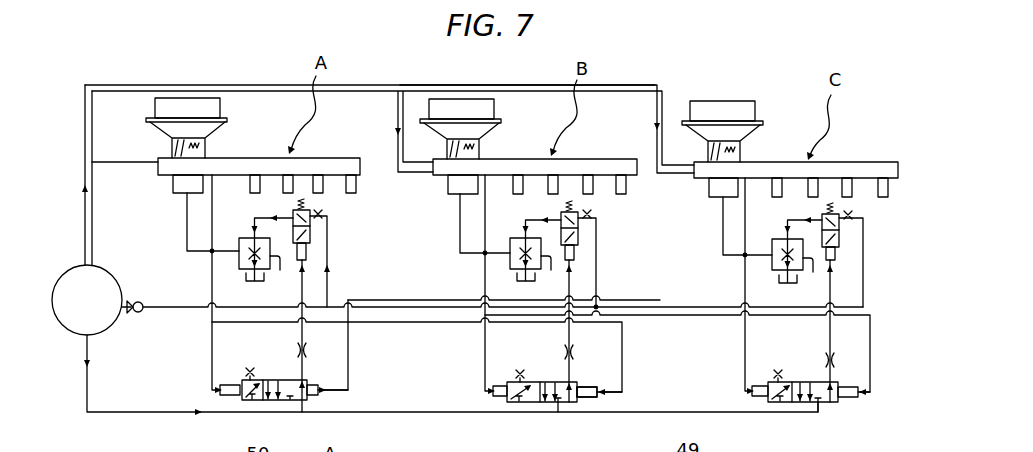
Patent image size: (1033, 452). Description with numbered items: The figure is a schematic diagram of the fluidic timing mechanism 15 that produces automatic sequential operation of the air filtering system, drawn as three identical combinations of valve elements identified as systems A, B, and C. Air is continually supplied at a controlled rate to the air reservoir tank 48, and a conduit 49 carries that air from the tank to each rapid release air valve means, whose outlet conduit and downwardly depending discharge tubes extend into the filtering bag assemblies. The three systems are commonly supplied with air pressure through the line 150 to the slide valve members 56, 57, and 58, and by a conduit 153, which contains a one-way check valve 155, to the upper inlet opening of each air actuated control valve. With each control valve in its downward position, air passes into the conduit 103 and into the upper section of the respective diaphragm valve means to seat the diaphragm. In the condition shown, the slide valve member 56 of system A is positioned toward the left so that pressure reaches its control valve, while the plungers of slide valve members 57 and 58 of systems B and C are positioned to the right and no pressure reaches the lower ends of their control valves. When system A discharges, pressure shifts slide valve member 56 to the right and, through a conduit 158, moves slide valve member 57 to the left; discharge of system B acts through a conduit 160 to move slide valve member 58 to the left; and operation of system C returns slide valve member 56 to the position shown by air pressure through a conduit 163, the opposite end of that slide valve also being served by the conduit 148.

The fluidic timing mechanism 15 is at (612, 84).
The air reservoir tank 48 is at (78, 266).
The conduit 49 is at (121, 162).
The slide valve member 56 is at (268, 378).
The slide valve member 57 is at (545, 375).
The slide valve member 58 is at (795, 373).
The conduit 103 is at (255, 218).
The conduit 148 is at (351, 360).
The line 150 is at (164, 414).
The conduit 153 is at (190, 312).
The one-way check valve 155 is at (143, 298).
The conduit 158 is at (458, 325).
The conduit 160 is at (698, 318).
The conduit 163 is at (612, 300).